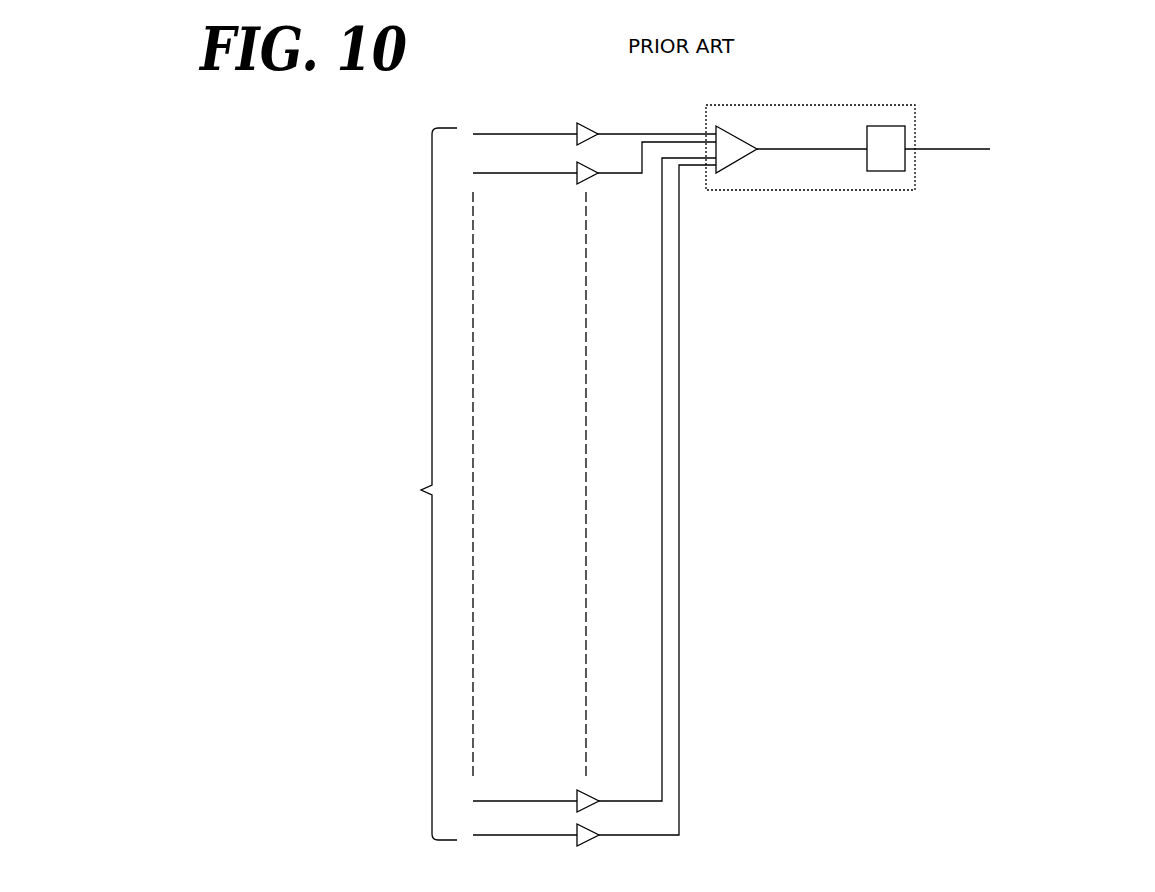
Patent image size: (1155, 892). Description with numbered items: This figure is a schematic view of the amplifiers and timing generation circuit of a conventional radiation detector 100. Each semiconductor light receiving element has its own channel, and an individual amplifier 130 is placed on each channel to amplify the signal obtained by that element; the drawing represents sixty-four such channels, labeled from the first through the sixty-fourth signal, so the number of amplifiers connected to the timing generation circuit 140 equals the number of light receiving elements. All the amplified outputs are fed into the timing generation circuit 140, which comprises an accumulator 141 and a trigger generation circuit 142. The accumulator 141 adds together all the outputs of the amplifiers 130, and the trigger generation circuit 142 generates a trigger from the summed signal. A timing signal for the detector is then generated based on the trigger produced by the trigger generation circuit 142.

The radiation detector 100 is at (1134, 132).
The amplifier 130 is at (577, 126).
The timing generation circuit 140 is at (829, 131).
The accumulator 141 is at (726, 167).
The trigger generation circuit 142 is at (866, 157).